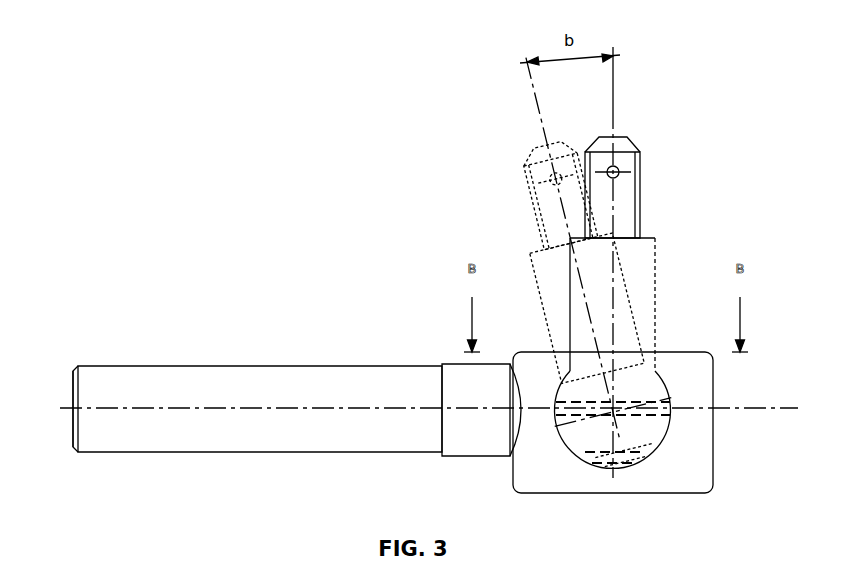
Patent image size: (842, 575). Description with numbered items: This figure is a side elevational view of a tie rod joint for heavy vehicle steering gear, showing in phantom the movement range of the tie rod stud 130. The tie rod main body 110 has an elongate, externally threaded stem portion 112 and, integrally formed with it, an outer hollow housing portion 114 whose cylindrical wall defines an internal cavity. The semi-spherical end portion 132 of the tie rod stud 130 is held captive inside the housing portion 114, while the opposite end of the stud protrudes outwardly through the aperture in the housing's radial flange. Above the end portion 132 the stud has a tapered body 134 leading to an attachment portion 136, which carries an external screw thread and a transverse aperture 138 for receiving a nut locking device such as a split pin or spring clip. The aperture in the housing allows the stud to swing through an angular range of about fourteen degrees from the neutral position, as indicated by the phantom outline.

The tie rod main body 110 is at (467, 455).
The stem portion 112 is at (205, 430).
The housing portion 114 is at (693, 380).
The tie rod stud 130 is at (508, 173).
The end portion 132 is at (633, 435).
The tapered body 134 is at (645, 292).
The attachment portion 136 is at (640, 195).
The transverse aperture 138 is at (617, 167).